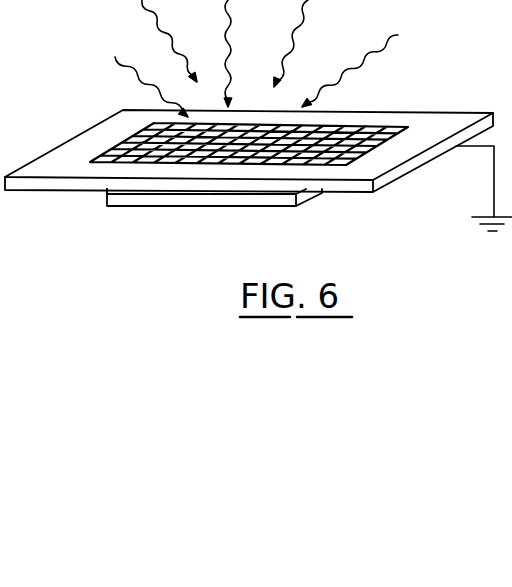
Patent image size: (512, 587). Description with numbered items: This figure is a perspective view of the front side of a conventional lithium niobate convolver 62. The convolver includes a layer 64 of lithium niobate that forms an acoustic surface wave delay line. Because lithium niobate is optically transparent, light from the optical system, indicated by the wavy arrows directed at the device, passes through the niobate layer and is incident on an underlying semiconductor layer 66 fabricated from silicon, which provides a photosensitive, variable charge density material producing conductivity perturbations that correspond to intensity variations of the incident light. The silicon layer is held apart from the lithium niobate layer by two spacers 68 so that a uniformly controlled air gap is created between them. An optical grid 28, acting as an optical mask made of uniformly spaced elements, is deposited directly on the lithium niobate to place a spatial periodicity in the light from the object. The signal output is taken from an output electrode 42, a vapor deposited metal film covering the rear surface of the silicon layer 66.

The optical grid 28 is at (135, 135).
The output electrode 42 is at (272, 207).
The lithium niobate convolver 62 is at (428, 90).
The lithium niobate layer 64 is at (70, 158).
The semiconductor layer 66 is at (235, 202).
The spacers 68 is at (105, 192).